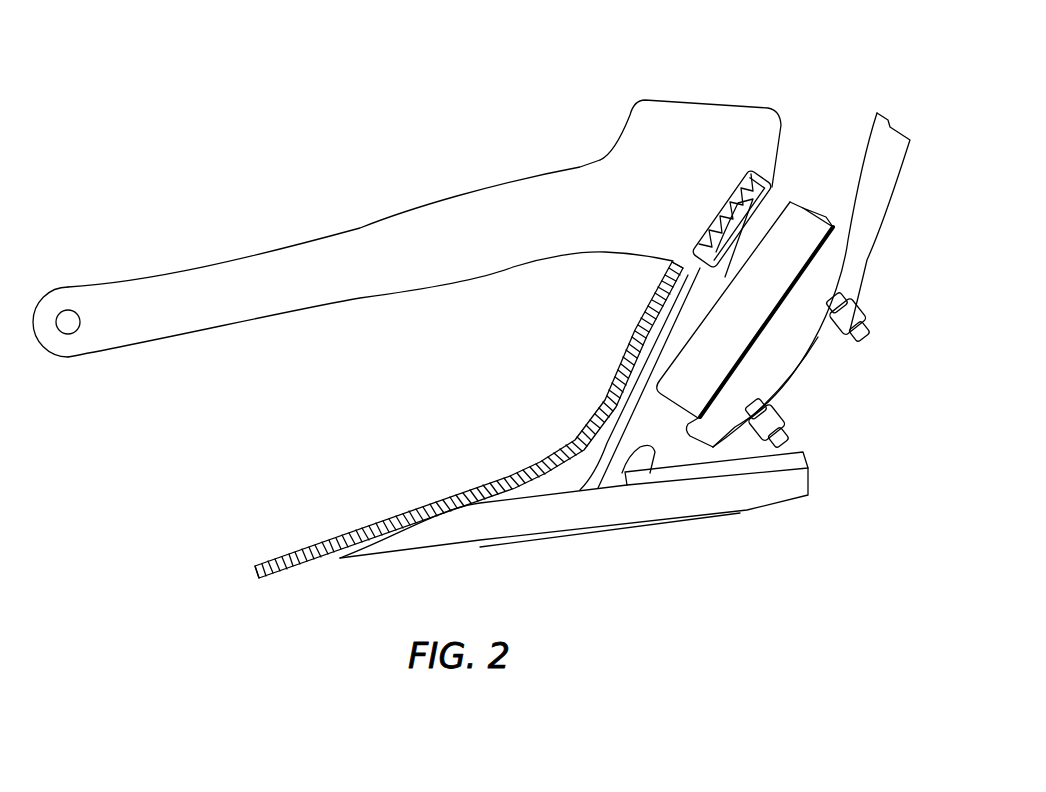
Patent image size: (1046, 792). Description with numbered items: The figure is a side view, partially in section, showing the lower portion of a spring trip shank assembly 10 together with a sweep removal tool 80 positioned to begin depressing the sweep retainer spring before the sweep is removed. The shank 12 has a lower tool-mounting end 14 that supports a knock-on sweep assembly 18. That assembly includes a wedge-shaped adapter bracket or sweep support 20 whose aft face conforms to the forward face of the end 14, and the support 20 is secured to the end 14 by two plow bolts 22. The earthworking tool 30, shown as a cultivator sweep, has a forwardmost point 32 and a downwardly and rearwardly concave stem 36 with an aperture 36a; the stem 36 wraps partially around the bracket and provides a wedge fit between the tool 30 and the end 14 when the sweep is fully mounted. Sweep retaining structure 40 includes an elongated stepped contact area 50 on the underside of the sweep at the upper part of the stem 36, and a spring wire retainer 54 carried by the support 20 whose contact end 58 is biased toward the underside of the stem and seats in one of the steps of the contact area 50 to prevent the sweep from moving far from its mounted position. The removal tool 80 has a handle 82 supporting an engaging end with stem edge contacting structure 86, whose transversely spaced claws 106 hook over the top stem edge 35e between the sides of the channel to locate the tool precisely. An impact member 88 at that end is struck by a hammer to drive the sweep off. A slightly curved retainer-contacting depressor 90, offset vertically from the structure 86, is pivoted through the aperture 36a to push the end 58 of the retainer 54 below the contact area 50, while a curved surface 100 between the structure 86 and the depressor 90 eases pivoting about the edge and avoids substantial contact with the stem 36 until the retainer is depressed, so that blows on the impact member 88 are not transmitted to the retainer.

The spring trip shank assembly 10 is at (890, 300).
The shank 12 is at (883, 145).
The lower tool-mounting end 14 is at (772, 373).
The knock-on sweep assembly 18 is at (487, 420).
The sweep support 20 is at (750, 338).
The plow bolts 22 is at (868, 338).
The earthworking tool 30 is at (415, 505).
The point 32 is at (252, 565).
The stem edge 35e is at (781, 122).
The stem 36 is at (632, 310).
The aperture 36a is at (667, 266).
The sweep retaining structure 40 is at (703, 207).
The contact area 50 is at (733, 188).
The retainer 54 is at (747, 240).
The contact end 58 is at (755, 200).
The sweep removal tool 80 is at (407, 213).
The handle 82 is at (311, 296).
The stem edge contacting structure 86 is at (820, 172).
The impact member 88 is at (670, 101).
The depressor 90 is at (697, 282).
The curved surface 100 is at (700, 212).
The claws 106 is at (804, 198).